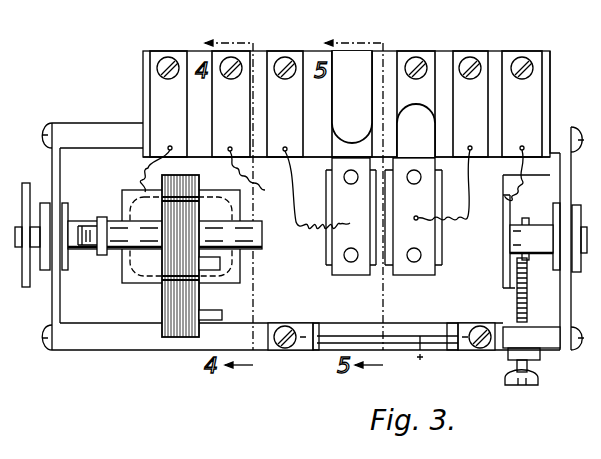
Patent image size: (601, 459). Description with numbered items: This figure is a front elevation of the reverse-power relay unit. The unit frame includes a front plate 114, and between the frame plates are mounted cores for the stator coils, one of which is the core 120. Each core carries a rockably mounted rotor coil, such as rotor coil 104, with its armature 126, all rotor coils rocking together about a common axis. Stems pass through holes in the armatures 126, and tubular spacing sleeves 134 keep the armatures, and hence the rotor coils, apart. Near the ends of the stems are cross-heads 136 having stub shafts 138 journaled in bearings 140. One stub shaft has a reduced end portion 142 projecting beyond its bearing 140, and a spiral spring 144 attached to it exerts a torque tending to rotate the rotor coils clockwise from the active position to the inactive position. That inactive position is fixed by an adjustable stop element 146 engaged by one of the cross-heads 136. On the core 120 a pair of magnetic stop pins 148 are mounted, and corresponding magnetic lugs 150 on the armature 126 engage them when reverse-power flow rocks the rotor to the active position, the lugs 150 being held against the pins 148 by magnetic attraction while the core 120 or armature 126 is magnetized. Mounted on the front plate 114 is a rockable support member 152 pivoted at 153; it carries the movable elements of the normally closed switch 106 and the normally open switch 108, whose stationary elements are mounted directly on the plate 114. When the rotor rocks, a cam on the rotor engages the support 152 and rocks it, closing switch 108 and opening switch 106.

The rotor coil 104 is at (122, 268).
The normally closed switch 106 is at (425, 130).
The normally open switch 108 is at (336, 124).
The front plate 114 is at (545, 108).
The core 120 is at (182, 337).
The armature 126 is at (182, 258).
The tubular spacing sleeve 134 is at (246, 232).
The cross-head 136 is at (510, 238).
The stub shaft 138 is at (93, 220).
The bearing 140 is at (48, 276).
The reduced end portion 142 is at (19, 230).
The spiral spring 144 is at (25, 268).
The stop element 146 is at (528, 312).
The stop pin 148 is at (211, 313).
The lug 150 is at (221, 266).
The rockable support member 152 is at (381, 346).
The pivot 153 is at (316, 352).